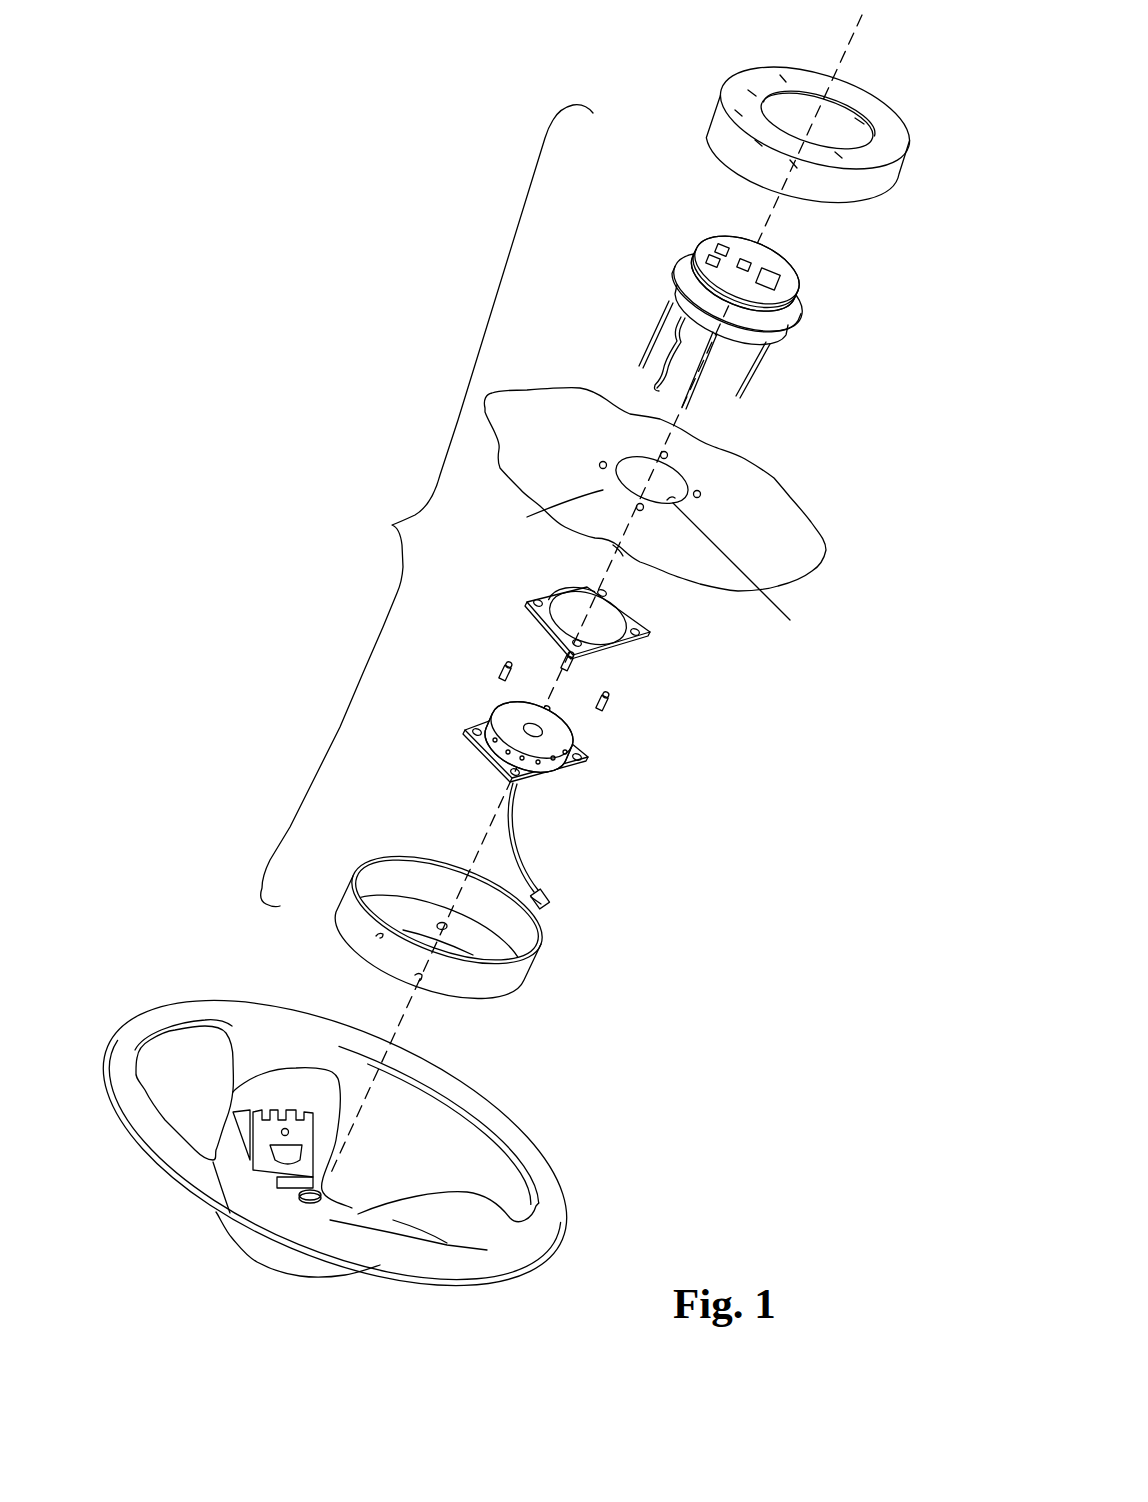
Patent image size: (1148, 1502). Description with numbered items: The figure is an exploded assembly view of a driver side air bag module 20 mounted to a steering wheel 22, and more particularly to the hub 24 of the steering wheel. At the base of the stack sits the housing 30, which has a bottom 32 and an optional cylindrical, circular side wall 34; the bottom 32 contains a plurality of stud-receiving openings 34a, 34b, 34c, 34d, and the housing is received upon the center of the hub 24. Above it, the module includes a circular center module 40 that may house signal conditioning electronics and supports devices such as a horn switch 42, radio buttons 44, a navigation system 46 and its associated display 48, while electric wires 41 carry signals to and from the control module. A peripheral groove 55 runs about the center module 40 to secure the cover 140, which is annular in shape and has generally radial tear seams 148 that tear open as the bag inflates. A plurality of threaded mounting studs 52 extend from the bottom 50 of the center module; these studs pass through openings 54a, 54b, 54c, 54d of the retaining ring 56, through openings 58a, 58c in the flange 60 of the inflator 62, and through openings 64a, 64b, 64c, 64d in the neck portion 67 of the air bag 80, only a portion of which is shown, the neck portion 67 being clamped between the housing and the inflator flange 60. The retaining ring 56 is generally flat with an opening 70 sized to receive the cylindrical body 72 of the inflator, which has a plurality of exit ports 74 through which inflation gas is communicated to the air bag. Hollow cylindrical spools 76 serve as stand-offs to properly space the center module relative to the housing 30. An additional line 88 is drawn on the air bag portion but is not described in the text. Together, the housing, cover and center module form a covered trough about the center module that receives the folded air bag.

The driver side air bag module 20 is at (427, 506).
The steering wheel 22 is at (335, 1143).
The hub 24 is at (257, 1137).
The housing 30 is at (447, 932).
The bottom 32 is at (388, 899).
The cylindrical, circular side wall 34 is at (438, 932).
The stud-receiving opening 34a is at (464, 957).
The stud-receiving opening 34b is at (442, 921).
The stud-receiving opening 34c is at (372, 939).
The stud-receiving opening 34d is at (419, 984).
The center module 40 is at (728, 304).
The electric wires 41 is at (656, 388).
The horn switch 42 is at (721, 244).
The radio buttons 44 is at (752, 266).
The navigation system 46 is at (711, 256).
The display 48 is at (776, 283).
The bottom of the center module 50 is at (776, 341).
The threaded mounting studs 52 is at (748, 388).
The opening of retaining ring 54a is at (641, 632).
The opening of retaining ring 54b is at (600, 589).
The opening of retaining ring 54c is at (533, 603).
The opening of retaining ring 54d is at (582, 647).
The peripheral groove 55 is at (699, 252).
The retaining ring 56 is at (592, 618).
The opening in inflator flange 58a is at (582, 757).
The opening in inflator flange 58c is at (476, 736).
The inflator flange 60 is at (546, 800).
The inflator 62 is at (555, 744).
The opening in neck portion 64a is at (701, 495).
The opening in neck portion 64b is at (661, 453).
The opening in neck portion 64c is at (599, 465).
The opening in neck portion 64d is at (642, 511).
The neck portion 67 is at (555, 523).
The opening of retaining ring 70 is at (556, 607).
The cylindrical body 72 is at (500, 755).
The exit ports 74 is at (558, 768).
The spools 76 is at (562, 659).
The air bag 80 is at (692, 516).
The foam edge line 88 is at (748, 574).
The cover 140 is at (788, 124).
The tear seams 148 is at (873, 114).